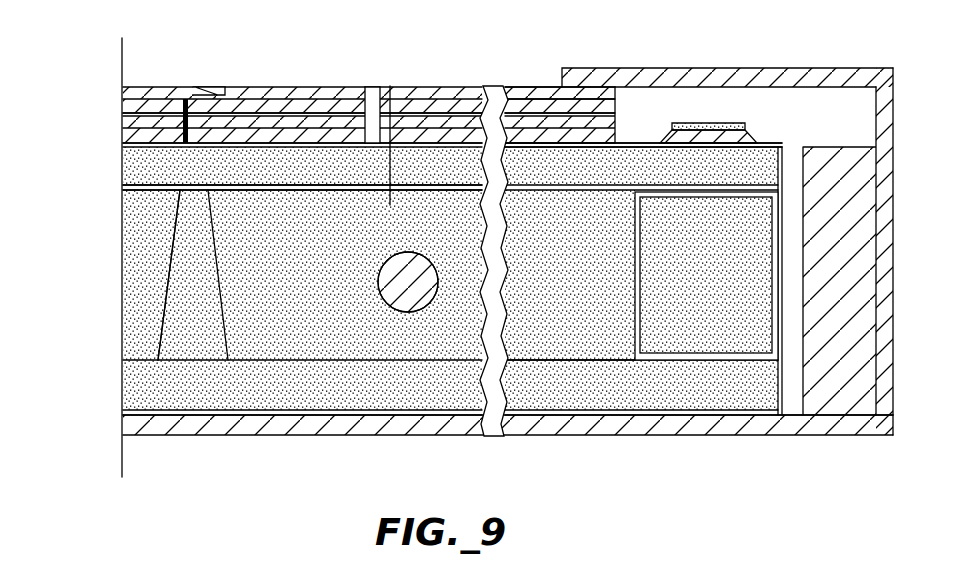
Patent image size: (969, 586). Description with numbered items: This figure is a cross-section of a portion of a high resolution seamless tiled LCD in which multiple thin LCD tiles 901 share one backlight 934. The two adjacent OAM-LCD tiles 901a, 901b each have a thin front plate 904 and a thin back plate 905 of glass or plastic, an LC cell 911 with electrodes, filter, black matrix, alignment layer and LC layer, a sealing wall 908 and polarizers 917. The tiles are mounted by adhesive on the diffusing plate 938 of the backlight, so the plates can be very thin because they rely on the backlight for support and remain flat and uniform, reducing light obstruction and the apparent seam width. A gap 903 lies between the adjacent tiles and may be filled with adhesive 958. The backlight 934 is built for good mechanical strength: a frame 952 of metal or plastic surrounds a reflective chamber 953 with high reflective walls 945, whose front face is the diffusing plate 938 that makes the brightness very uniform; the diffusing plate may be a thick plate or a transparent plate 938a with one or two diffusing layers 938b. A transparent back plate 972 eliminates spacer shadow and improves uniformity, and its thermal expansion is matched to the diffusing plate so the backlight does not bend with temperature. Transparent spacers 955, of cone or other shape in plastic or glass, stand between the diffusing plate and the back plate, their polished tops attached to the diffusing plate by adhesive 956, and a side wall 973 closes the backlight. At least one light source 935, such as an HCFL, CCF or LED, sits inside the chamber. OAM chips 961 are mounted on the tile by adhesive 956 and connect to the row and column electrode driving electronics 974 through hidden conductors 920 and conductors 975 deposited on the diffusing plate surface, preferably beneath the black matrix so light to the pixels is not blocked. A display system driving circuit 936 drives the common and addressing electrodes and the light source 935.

The thin LCD tile 901 is at (100, 83).
The LCD tile 901a is at (303, 66).
The LCD tile 901b is at (473, 60).
The gap 903 is at (367, 88).
The thin front plate 904 is at (293, 112).
The thin back plate 905 is at (585, 125).
The sealing wall 908 is at (390, 86).
The LC cell 911 is at (560, 140).
The polarizer 917 is at (600, 95).
The hidden conductor 920 is at (180, 115).
The backlight 934 is at (100, 150).
The light source 935 is at (408, 290).
The display system driving circuit 936 is at (825, 175).
The diffusing plate 938 is at (348, 200).
The transparent plate 938a is at (328, 185).
The diffusing layer 938b is at (375, 190).
The reflective wall 945 is at (778, 372).
The frame 952 is at (870, 430).
The reflective chamber 953 is at (548, 325).
The transparent spacer 955 is at (203, 313).
The adhesive 956 is at (212, 90).
The adhesive 958 is at (375, 88).
The OAM chip 961 is at (130, 95).
The transparent back plate 972 is at (305, 378).
The side wall 973 is at (665, 275).
The row and column electrode driving electronics 974 is at (728, 133).
The conductor 975 is at (640, 142).